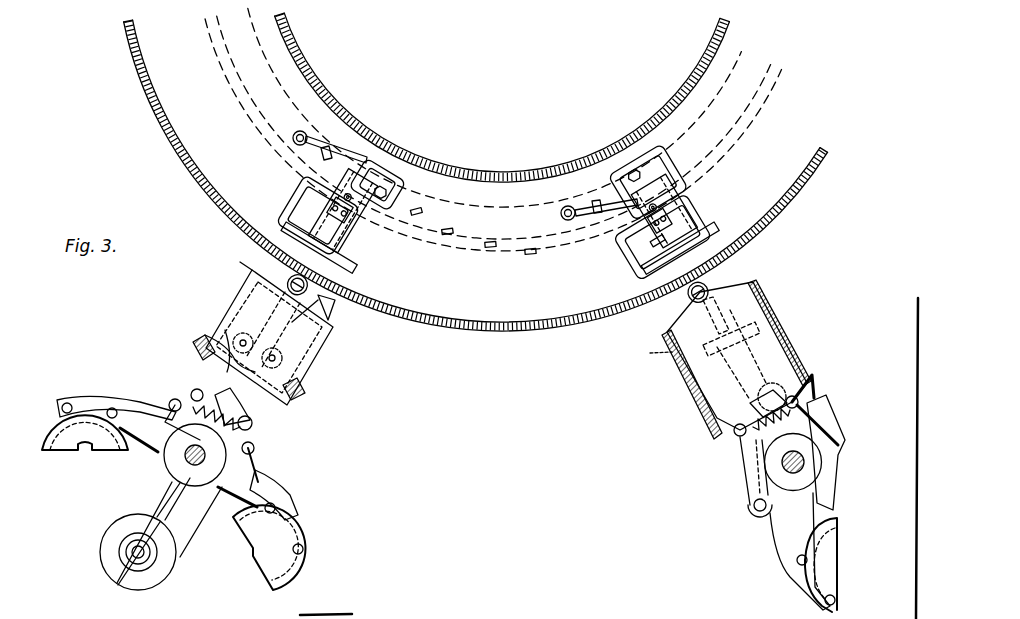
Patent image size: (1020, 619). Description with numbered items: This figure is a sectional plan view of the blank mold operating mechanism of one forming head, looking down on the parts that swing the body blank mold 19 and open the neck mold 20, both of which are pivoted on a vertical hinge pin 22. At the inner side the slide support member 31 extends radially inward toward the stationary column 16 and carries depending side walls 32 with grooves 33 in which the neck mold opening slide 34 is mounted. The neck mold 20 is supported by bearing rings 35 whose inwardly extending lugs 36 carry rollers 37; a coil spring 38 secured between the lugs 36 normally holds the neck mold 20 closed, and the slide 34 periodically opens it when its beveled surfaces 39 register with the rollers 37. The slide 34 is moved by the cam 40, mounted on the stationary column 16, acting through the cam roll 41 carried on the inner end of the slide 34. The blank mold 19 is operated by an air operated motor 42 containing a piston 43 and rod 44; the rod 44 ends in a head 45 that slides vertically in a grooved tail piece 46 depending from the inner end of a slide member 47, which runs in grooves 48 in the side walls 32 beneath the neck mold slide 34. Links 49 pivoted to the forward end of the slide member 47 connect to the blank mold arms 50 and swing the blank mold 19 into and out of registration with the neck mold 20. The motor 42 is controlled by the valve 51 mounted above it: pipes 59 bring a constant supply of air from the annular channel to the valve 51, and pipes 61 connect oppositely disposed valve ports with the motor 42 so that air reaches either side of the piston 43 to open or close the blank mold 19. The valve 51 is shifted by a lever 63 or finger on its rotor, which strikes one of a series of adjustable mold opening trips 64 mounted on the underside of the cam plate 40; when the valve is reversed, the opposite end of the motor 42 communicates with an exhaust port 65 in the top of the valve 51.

The stationary column 16 is at (447, 172).
The body blank mold 19 is at (74, 447).
The neck mold 20 is at (168, 574).
The vertical hinge pin 22 is at (196, 466).
The slide support member 31 is at (318, 366).
The side walls 32 is at (676, 378).
The grooves 33 is at (758, 286).
The neck mold opening slide 34 is at (225, 345).
The bearing rings 35 is at (190, 456).
The lugs 36 is at (178, 428).
The rollers 37 is at (180, 398).
The coil spring 38 is at (295, 394).
The beveled surfaces 39 is at (266, 420).
The cam 40 is at (510, 332).
The cam roll 41 is at (310, 285).
The air operated motor 42 is at (355, 228).
The piston 43 is at (690, 222).
The rod 44 is at (352, 252).
The head 45 is at (268, 278).
The grooved tail piece 46 is at (330, 302).
The slide member 47 is at (335, 320).
The grooves 48 is at (670, 356).
The links 49 is at (200, 380).
The blank mold arms 50 is at (150, 410).
The valve 51 is at (345, 198).
The pipes 59 is at (325, 138).
The pipes 61 is at (280, 210).
The lever 63 is at (383, 175).
The mold opening trips 64 is at (424, 213).
The exhaust port 65 is at (634, 240).